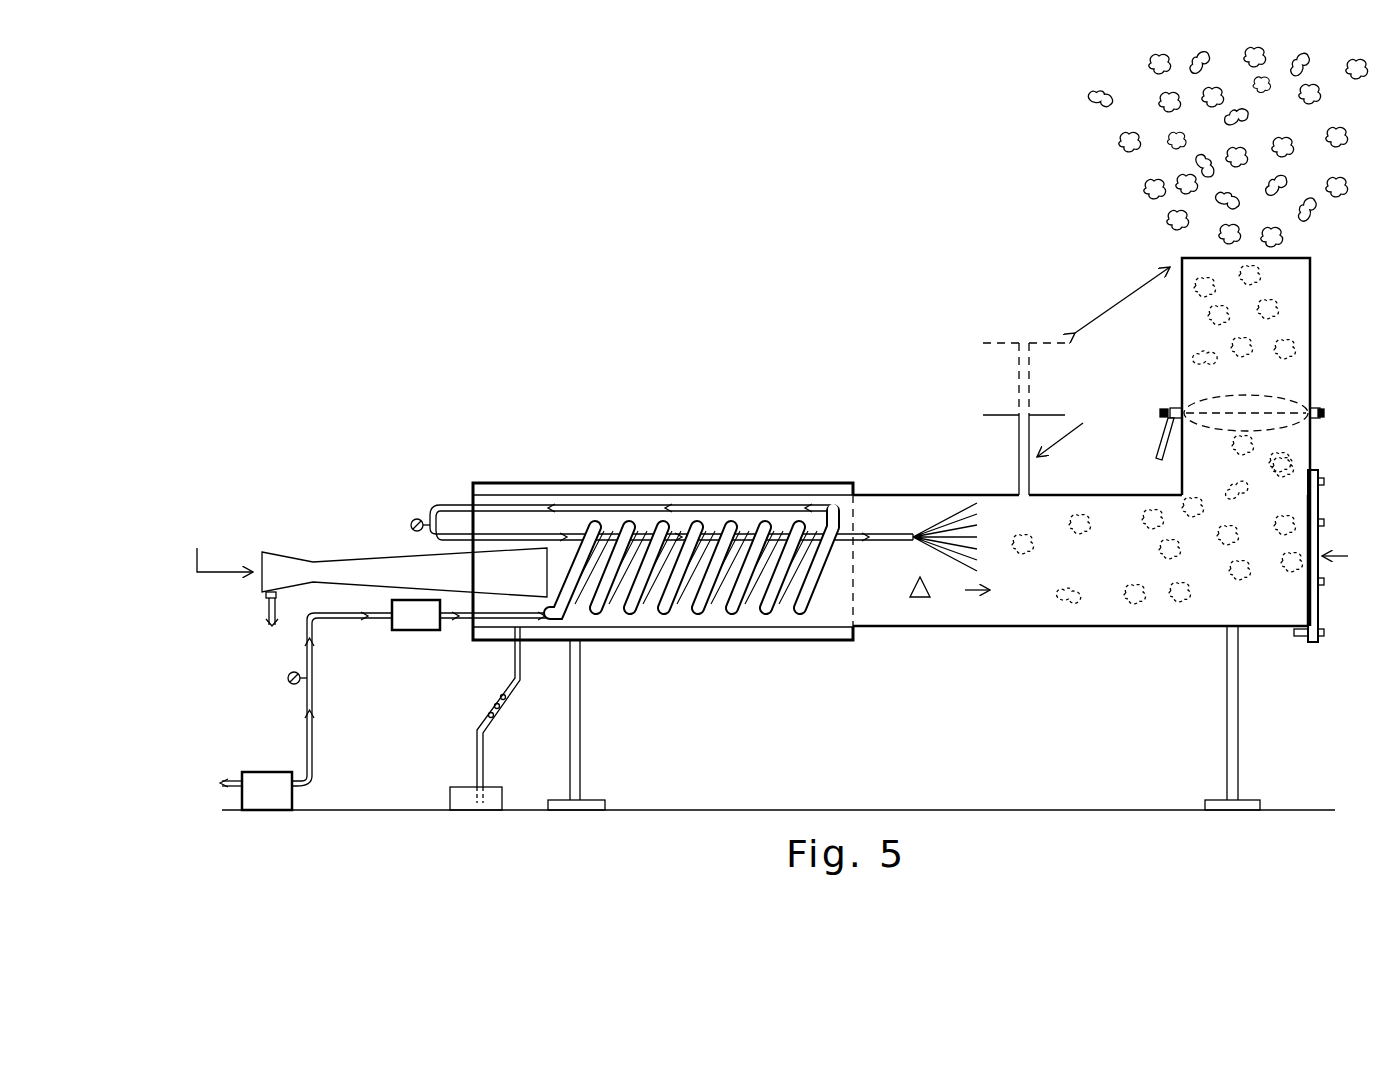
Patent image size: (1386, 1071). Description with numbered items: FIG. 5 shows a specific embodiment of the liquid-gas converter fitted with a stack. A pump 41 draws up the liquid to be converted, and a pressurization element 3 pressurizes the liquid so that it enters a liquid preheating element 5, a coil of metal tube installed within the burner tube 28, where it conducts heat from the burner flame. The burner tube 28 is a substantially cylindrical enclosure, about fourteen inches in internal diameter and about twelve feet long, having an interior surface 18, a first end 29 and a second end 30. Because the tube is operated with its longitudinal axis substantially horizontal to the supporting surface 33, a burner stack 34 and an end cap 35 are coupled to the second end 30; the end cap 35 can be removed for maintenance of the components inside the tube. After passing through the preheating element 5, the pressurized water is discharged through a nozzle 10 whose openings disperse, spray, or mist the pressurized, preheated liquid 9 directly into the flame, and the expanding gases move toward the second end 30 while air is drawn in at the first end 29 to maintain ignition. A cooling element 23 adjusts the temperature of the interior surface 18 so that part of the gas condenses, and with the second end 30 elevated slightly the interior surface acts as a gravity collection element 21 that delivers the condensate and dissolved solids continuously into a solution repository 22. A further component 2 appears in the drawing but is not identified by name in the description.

The dry ice particles 2 is at (1145, 115).
The pressurization element 3 is at (412, 632).
The liquid preheating element 5 is at (804, 614).
The pressurized, preheated liquid 9 is at (381, 621).
The nozzle 10 is at (900, 535).
The interior surface 18 is at (1090, 497).
The gravity collection element 21 is at (512, 678).
The solution repository 22 is at (462, 790).
The cooling element 23 is at (636, 642).
The burner tube 28 is at (1050, 628).
The first end 29 is at (209, 548).
The second end 30 is at (375, 553).
The supporting surface 33 is at (990, 808).
The burner stack 34 is at (1312, 345).
The end cap 35 is at (1320, 612).
The pump 41 is at (267, 780).